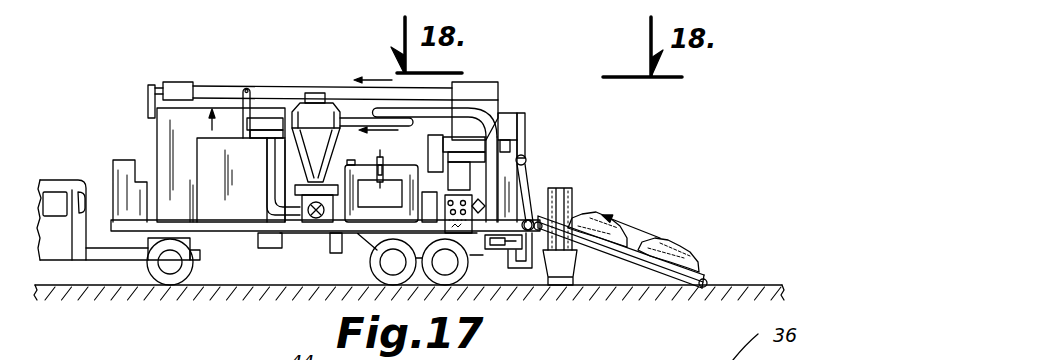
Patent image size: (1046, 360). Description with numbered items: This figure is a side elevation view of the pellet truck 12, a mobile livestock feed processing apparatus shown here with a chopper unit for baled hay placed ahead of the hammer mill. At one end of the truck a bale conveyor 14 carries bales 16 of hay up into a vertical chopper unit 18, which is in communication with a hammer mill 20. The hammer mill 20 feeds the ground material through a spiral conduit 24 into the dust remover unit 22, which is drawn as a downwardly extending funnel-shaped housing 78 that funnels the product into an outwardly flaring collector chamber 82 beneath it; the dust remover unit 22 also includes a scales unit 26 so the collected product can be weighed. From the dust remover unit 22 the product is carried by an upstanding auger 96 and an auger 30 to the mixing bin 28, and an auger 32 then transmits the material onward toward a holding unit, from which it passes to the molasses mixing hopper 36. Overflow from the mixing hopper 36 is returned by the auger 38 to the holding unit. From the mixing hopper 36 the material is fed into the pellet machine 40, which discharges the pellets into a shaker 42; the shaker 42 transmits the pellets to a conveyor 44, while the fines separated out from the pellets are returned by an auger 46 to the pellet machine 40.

The pellet truck 12 is at (198, 52).
The bale conveyor 14 is at (705, 272).
The bales 16 is at (663, 248).
The vertical chopper unit 18 is at (532, 167).
The hammer mill 20 is at (495, 147).
The dust remover unit 22 is at (297, 104).
The spiral conduit 24 is at (390, 108).
The scales unit 26 is at (303, 214).
The mixing bin 28 is at (212, 170).
The auger 30 is at (275, 152).
The auger 32 is at (231, 112).
The molasses mixing hopper 36 is at (472, 90).
The auger 38 is at (270, 86).
The pellet machine 40 is at (502, 118).
The shaker 42 is at (510, 278).
The conveyor 44 is at (572, 200).
The auger 46 is at (527, 132).
The funnel-shaped housing 78 is at (318, 148).
The collector chamber 82 is at (303, 180).
The upstanding auger 96 is at (277, 205).